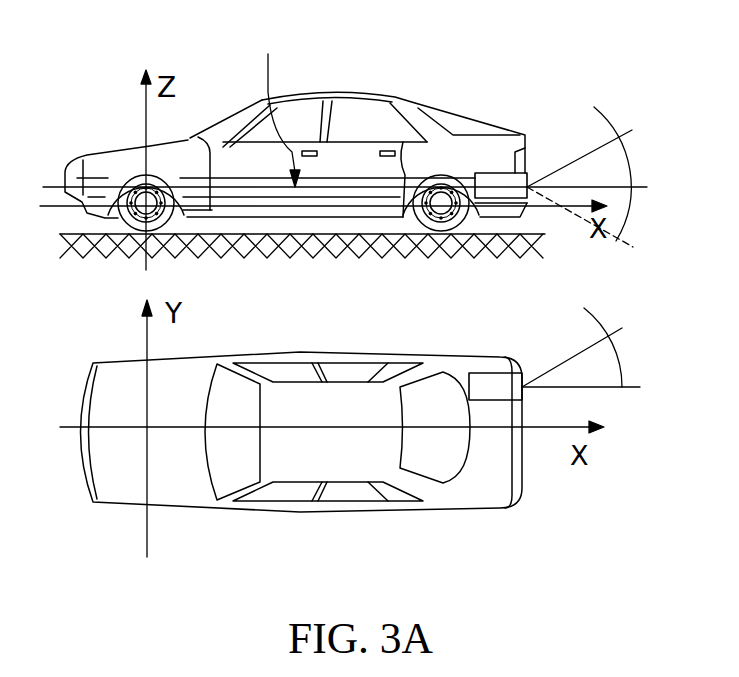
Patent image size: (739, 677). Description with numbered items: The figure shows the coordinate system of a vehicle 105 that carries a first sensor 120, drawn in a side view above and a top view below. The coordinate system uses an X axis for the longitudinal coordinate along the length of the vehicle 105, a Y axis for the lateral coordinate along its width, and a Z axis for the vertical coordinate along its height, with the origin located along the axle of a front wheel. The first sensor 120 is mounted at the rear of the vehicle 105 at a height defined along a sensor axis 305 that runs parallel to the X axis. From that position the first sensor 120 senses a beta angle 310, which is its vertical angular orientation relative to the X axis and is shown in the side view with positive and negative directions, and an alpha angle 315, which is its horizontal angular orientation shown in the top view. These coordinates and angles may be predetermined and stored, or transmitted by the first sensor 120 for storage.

The vehicle 105 is at (212, 53).
The first sensor 120 is at (498, 287).
The sensor axis 305 is at (271, 107).
The beta angle 310 is at (566, 177).
The alpha angle 315 is at (558, 376).